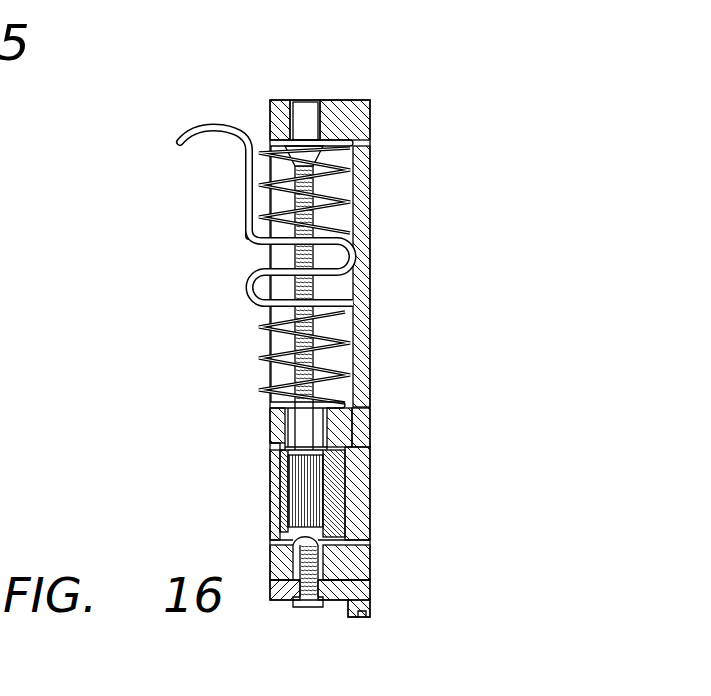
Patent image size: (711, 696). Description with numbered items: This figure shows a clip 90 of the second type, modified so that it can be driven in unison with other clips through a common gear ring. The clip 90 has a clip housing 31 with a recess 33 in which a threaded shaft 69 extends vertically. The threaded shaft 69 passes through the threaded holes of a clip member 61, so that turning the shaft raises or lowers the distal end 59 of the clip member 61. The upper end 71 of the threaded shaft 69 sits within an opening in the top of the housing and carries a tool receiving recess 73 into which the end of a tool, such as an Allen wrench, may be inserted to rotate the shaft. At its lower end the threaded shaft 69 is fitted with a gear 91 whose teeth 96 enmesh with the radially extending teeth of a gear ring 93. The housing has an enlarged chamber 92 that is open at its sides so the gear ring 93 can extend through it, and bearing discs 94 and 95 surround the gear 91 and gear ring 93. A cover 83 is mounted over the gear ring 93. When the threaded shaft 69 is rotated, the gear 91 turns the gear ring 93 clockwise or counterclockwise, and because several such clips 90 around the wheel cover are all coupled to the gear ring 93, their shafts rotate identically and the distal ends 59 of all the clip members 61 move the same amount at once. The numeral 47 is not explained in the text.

The clip 90 is at (392, 174).
The upper end 71 is at (312, 123).
The tool receiving recess 73 is at (297, 113).
The recess 33 is at (342, 287).
The threaded shaft 69 is at (350, 370).
The distal end 59 is at (217, 128).
The clip member 61 is at (241, 220).
The lower wire bend 47 is at (239, 270).
The clip housing 31 is at (352, 427).
The cover 83 is at (273, 447).
The bearing disc 95 is at (284, 462).
The gear 91 is at (297, 505).
The gear ring 93 is at (340, 484).
The bearing disc 94 is at (347, 535).
The teeth 96 is at (297, 540).
The enlarged chamber 92 is at (293, 537).